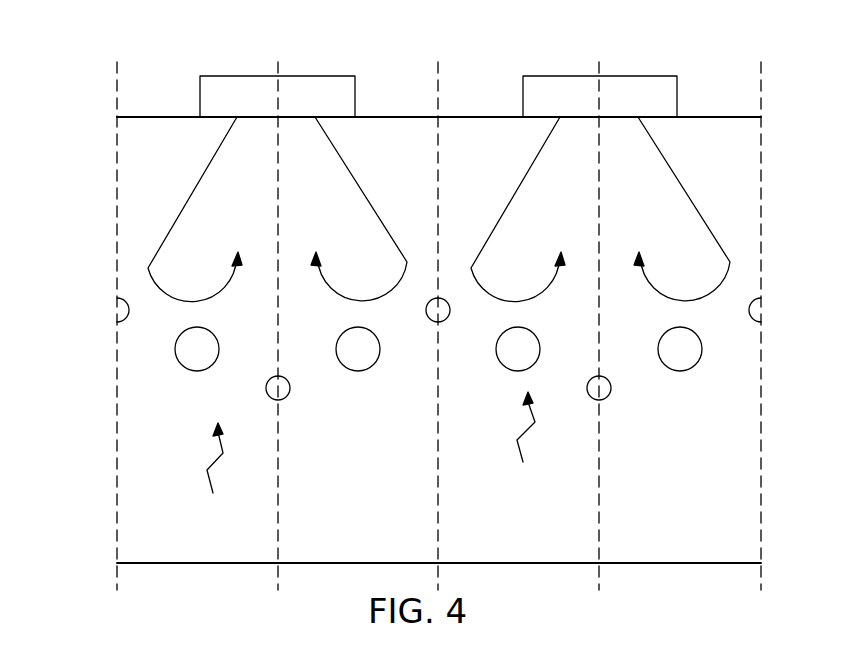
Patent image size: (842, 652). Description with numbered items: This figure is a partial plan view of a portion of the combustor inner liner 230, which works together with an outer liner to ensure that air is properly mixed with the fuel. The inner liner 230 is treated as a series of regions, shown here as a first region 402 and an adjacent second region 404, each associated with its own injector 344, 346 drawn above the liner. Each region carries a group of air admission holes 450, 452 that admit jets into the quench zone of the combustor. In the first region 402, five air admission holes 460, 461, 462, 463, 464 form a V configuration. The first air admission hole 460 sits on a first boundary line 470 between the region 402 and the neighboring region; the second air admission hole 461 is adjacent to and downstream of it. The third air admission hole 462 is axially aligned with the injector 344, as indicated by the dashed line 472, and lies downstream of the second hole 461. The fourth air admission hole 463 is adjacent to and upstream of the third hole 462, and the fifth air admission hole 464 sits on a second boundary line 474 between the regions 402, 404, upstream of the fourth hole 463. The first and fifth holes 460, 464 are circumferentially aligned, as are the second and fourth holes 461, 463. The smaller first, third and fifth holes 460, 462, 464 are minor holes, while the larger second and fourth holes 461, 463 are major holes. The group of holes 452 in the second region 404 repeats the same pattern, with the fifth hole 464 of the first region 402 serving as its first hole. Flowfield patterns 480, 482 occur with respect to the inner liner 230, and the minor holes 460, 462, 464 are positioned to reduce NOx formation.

The inner liner 230 is at (93, 131).
The injector 344 is at (227, 80).
The injector 346 is at (557, 75).
The region 402 is at (161, 125).
The region 404 is at (492, 120).
The first boundary line 470 is at (117, 180).
The dashed line 472 is at (278, 195).
The second boundary line 474 is at (438, 167).
The flowfield pattern 480 is at (178, 212).
The flowfield pattern 482 is at (518, 182).
The first air admission hole 460 is at (130, 306).
The second air admission hole 461 is at (190, 371).
The third air admission hole 462 is at (287, 398).
The fourth air admission hole 463 is at (366, 371).
The fifth air admission hole 464 is at (450, 306).
The group of air admission holes 450 is at (210, 473).
The group of air admission holes 452 is at (522, 441).